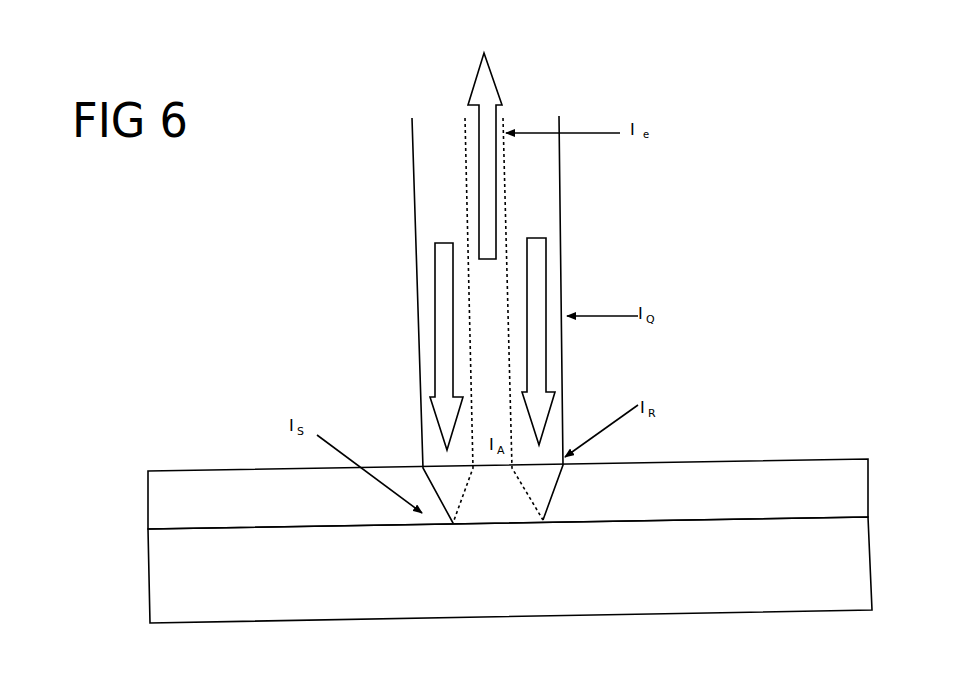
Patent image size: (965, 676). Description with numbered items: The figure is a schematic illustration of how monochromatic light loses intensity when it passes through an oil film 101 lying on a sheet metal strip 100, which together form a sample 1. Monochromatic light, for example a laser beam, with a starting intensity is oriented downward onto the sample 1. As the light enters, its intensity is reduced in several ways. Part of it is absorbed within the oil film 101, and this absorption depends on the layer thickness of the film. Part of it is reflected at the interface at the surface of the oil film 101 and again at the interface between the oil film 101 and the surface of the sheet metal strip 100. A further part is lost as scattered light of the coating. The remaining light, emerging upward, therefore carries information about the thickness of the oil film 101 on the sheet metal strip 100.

The sample 1 is at (499, 514).
The sheet metal strip 100 is at (828, 567).
The oil film 101 is at (740, 495).